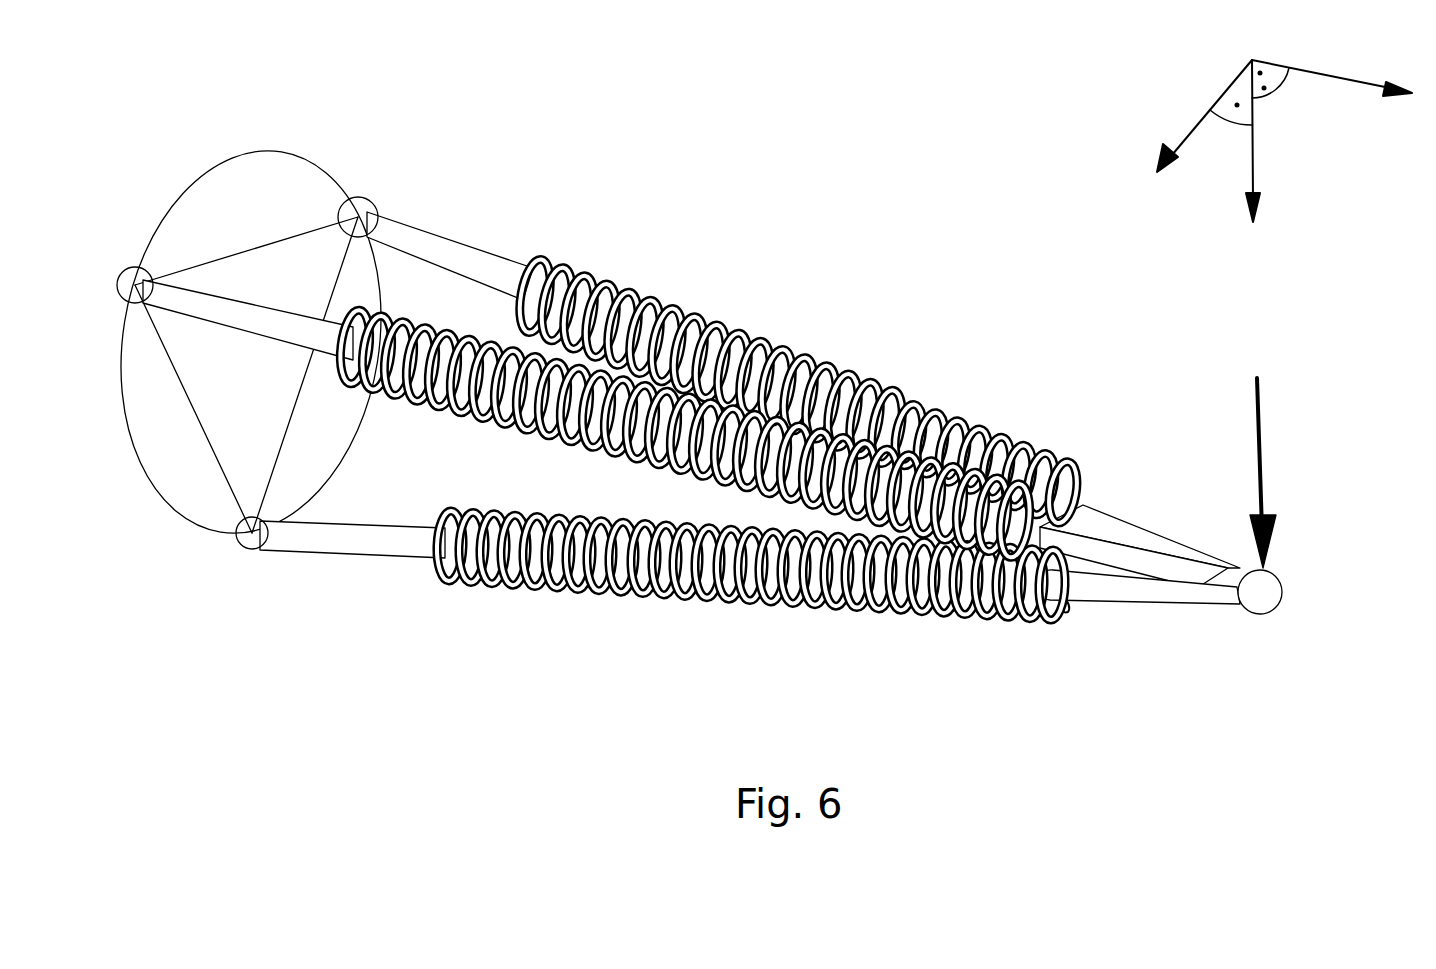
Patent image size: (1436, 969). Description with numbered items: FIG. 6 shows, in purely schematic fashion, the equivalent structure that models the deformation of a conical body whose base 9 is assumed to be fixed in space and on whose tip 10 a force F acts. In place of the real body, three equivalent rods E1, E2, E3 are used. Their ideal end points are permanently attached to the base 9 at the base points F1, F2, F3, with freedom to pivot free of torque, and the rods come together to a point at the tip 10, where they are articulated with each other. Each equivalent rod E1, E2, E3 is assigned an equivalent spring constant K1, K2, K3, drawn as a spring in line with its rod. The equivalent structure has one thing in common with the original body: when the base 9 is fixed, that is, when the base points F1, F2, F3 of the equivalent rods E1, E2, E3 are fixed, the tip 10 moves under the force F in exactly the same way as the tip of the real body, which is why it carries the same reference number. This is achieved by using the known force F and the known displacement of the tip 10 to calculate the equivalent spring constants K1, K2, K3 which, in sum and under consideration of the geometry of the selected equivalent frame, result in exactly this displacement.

The base 9 is at (262, 233).
The tip 10 is at (1250, 632).
The base point F1 is at (365, 200).
The base point F2 is at (137, 268).
The base point F3 is at (246, 549).
The equivalent rod E1 is at (482, 270).
The equivalent rod E2 is at (253, 312).
The equivalent rod E3 is at (390, 542).
The equivalent spring constant K1 is at (740, 347).
The equivalent spring constant K2 is at (430, 397).
The equivalent spring constant K3 is at (585, 587).
The force F is at (1235, 473).